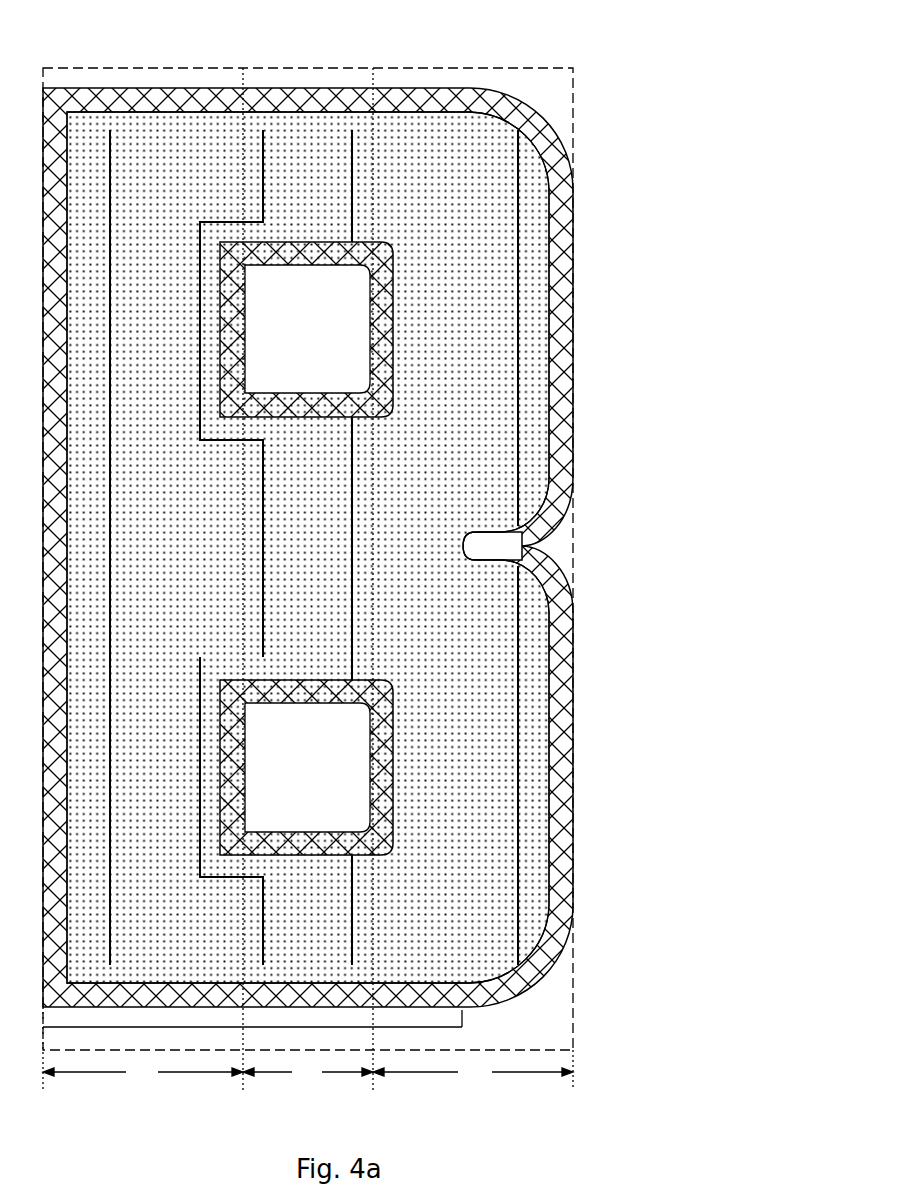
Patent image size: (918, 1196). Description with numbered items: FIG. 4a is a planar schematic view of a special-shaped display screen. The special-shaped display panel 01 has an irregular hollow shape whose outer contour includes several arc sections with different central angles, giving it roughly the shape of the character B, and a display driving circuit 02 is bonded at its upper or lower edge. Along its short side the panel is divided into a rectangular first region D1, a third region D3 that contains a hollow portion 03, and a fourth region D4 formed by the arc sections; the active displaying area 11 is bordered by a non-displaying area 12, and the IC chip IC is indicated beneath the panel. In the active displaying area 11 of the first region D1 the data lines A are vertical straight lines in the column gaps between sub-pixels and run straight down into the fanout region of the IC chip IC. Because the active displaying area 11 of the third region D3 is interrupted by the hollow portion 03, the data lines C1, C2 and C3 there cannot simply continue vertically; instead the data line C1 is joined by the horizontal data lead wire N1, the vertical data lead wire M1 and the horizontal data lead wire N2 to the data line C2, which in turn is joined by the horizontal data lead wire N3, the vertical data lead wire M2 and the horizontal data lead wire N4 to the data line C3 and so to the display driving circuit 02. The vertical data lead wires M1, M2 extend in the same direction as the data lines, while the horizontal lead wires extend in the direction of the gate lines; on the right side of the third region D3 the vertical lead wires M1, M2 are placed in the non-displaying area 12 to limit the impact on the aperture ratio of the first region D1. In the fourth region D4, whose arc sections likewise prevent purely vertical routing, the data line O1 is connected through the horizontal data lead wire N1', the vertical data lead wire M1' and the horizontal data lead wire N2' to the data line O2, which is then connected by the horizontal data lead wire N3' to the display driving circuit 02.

The active displaying area 11 is at (140, 135).
The special-shaped display panel 01 is at (303, 90).
The non-displaying area 12 is at (470, 88).
The hollow portion 03 is at (297, 238).
The display driving circuit 02 is at (420, 1050).
The data lines A is at (130, 303).
The vertical data lead wire M1 is at (290, 393).
The vertical data lead wire M2 is at (198, 822).
The data line O1 is at (518, 310).
The data line O2 is at (518, 770).
The data line C1 is at (248, 178).
The data line C2 is at (248, 563).
The data line C3 is at (245, 955).
The horizontal data lead wire N1 is at (290, 208).
The horizontal data lead wire N2 is at (291, 450).
The horizontal data lead wire N3 is at (294, 642).
The horizontal data lead wire N4 is at (357, 860).
The horizontal data lead wire N1' is at (498, 508).
The vertical data lead wire M1' is at (432, 550).
The horizontal data lead wire N2' is at (500, 593).
The horizontal data lead wire N3' is at (505, 946).
The IC chip IC is at (252, 1019).
The first region D1 is at (143, 1072).
The third region D3 is at (308, 1072).
The fourth region D4 is at (473, 1072).